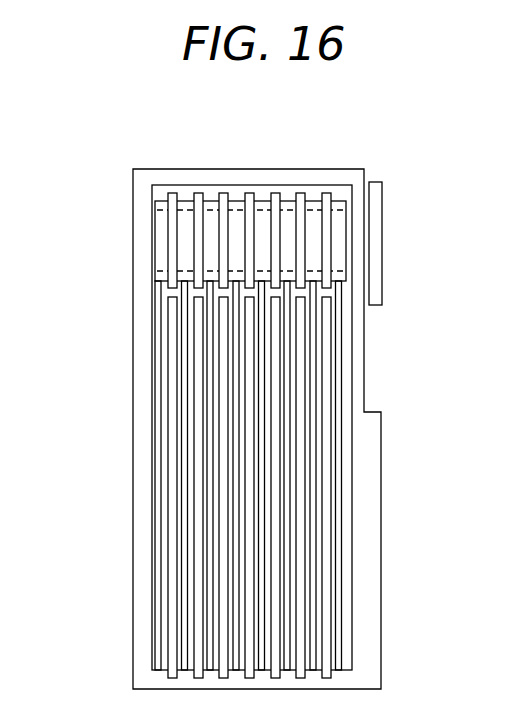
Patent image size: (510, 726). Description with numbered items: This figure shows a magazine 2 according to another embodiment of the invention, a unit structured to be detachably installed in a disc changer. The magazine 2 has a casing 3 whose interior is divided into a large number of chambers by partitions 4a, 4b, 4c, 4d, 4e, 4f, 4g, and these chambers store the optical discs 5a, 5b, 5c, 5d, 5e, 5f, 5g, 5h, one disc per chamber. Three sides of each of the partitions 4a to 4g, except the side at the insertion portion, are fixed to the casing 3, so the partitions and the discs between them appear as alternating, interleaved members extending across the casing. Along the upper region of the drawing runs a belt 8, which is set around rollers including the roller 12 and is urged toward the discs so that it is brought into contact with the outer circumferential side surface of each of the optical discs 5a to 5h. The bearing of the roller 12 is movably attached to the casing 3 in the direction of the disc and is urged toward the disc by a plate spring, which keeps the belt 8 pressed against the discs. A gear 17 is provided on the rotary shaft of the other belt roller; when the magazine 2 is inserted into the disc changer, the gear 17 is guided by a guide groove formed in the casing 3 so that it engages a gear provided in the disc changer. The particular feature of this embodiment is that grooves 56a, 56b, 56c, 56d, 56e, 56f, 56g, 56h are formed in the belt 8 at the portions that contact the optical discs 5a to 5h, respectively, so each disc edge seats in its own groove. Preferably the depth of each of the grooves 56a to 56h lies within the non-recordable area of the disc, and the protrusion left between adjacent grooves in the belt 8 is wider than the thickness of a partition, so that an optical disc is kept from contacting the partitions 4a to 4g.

The magazine 2 is at (135, 425).
The casing 3 is at (150, 492).
The partition 4a is at (327, 333).
The partition 4b is at (300, 390).
The partition 4c is at (275, 445).
The partition 4d is at (248, 497).
The partition 4e is at (223, 547).
The partition 4f is at (198, 597).
The partition 4g is at (167, 353).
The optical disc 5a is at (340, 308).
The optical disc 5b is at (312, 362).
The optical disc 5c is at (288, 418).
The optical disc 5d is at (262, 472).
The optical disc 5e is at (235, 523).
The optical disc 5f is at (210, 572).
The optical disc 5g is at (185, 624).
The optical disc 5h is at (160, 310).
The belt 8 is at (157, 272).
The roller 12 is at (157, 228).
The gear 17 is at (385, 217).
The groove 56a is at (338, 195).
The groove 56b is at (313, 195).
The groove 56c is at (287, 193).
The groove 56d is at (263, 195).
The groove 56e is at (238, 197).
The groove 56f is at (212, 198).
The groove 56g is at (187, 197).
The groove 56h is at (158, 193).